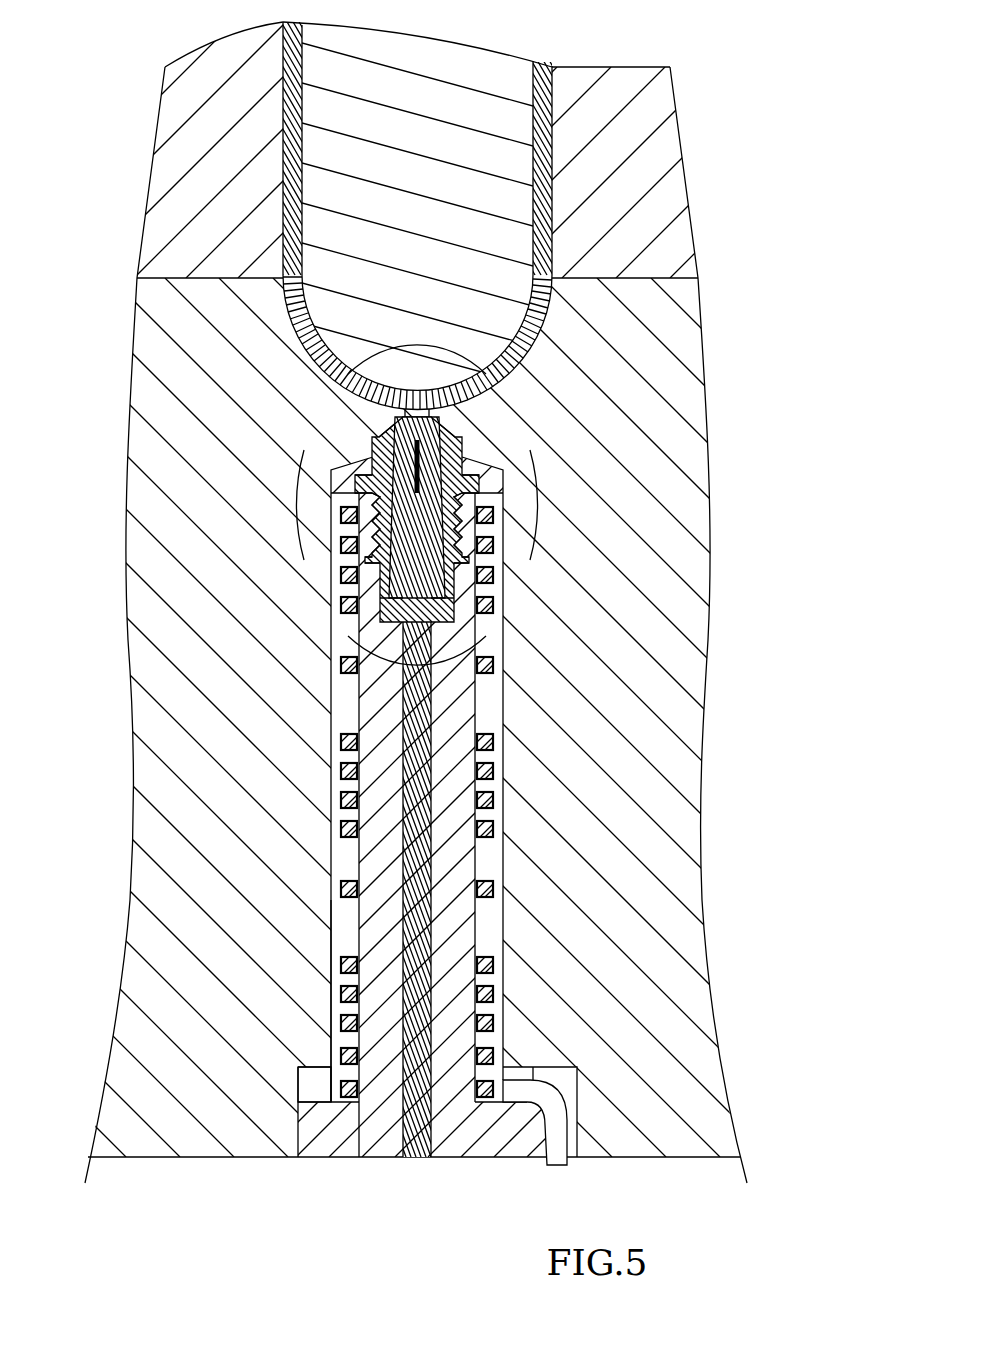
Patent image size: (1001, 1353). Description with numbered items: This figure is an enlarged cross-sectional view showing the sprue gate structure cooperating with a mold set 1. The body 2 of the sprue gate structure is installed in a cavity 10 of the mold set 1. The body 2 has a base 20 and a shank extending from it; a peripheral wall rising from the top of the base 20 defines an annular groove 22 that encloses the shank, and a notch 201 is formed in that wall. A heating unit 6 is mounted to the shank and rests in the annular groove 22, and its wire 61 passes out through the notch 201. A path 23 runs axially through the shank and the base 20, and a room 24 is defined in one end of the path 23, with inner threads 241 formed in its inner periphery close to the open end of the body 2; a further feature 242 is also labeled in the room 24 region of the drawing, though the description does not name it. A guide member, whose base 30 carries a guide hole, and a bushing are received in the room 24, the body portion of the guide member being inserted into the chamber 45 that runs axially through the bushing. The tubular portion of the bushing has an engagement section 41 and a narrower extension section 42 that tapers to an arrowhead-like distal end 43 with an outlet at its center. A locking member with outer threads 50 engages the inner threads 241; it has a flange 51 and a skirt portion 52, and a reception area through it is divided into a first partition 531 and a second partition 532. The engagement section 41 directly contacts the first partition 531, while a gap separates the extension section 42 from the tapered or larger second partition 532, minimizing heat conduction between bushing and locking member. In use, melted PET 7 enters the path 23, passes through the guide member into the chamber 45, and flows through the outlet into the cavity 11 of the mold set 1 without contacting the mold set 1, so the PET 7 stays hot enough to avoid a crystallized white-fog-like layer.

The mold set 1 is at (158, 773).
The body 2 is at (453, 822).
The heating unit 6 is at (477, 979).
The PET 7 is at (540, 67).
The cavity 10 is at (343, 690).
The cavity 11 is at (552, 173).
The base 20 is at (322, 1140).
The annular groove 22 is at (325, 1060).
The path 23 is at (393, 1110).
The room 24 is at (440, 627).
The base 30 is at (350, 640).
The engagement section 41 is at (368, 540).
The extension section 42 is at (345, 447).
The distal end 43 is at (424, 407).
The chamber 45 is at (352, 462).
The outer threads 50 is at (505, 511).
The flange 51 is at (480, 487).
The skirt portion 52 is at (468, 455).
The wire 61 is at (555, 1112).
The notch 201 is at (310, 1078).
The inner threads 241 is at (353, 485).
The lug 242 is at (370, 556).
The first partition 531 is at (368, 540).
The second partition 532 is at (455, 430).